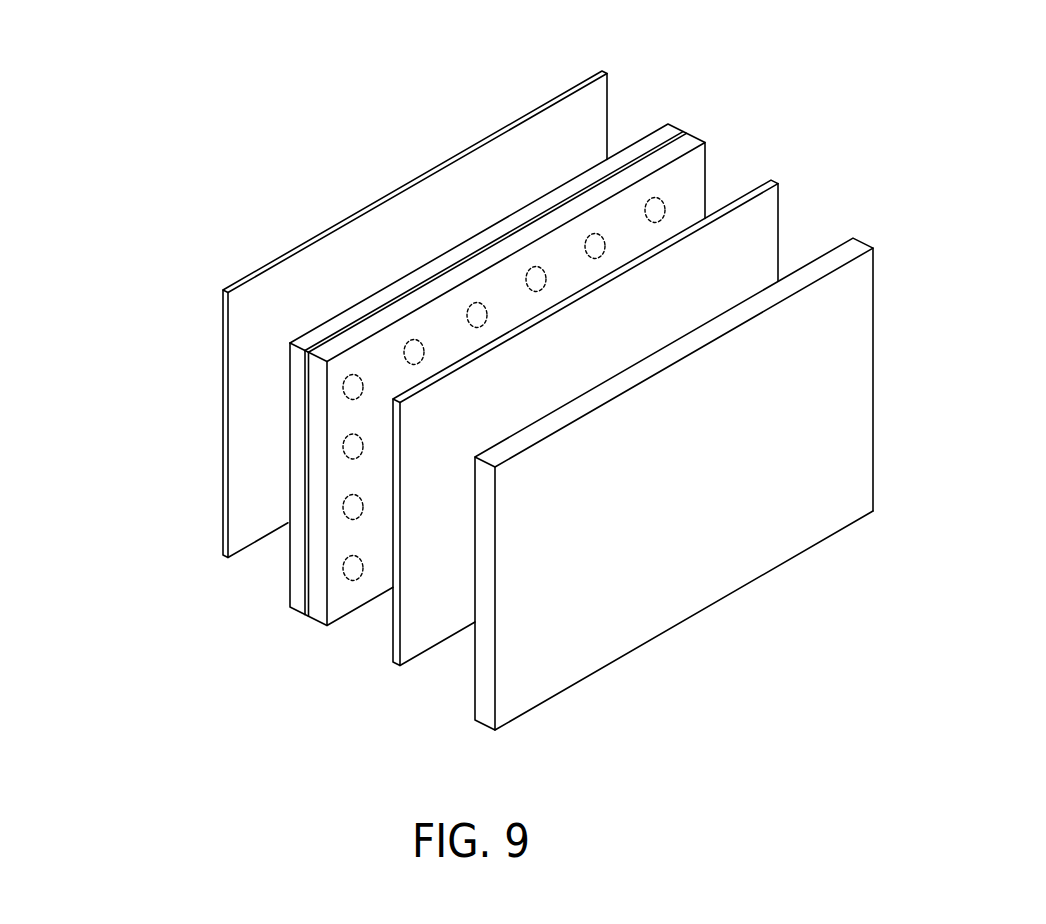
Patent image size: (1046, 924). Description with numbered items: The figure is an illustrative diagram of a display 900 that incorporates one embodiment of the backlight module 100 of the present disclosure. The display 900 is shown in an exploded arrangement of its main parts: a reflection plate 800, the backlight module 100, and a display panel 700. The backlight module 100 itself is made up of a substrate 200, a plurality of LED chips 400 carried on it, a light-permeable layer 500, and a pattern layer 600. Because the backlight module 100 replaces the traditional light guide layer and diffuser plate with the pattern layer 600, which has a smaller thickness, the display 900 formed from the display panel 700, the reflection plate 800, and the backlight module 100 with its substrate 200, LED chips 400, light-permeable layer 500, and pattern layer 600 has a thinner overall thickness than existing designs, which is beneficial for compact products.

The display 900 is at (352, 70).
The reflection plate 800 is at (385, 222).
The backlight module 100 is at (374, 396).
The substrate 200 is at (296, 364).
The light-permeable layer 500 is at (315, 443).
The LED chips 400 is at (352, 517).
The pattern layer 600 is at (405, 613).
The display panel 700 is at (852, 370).